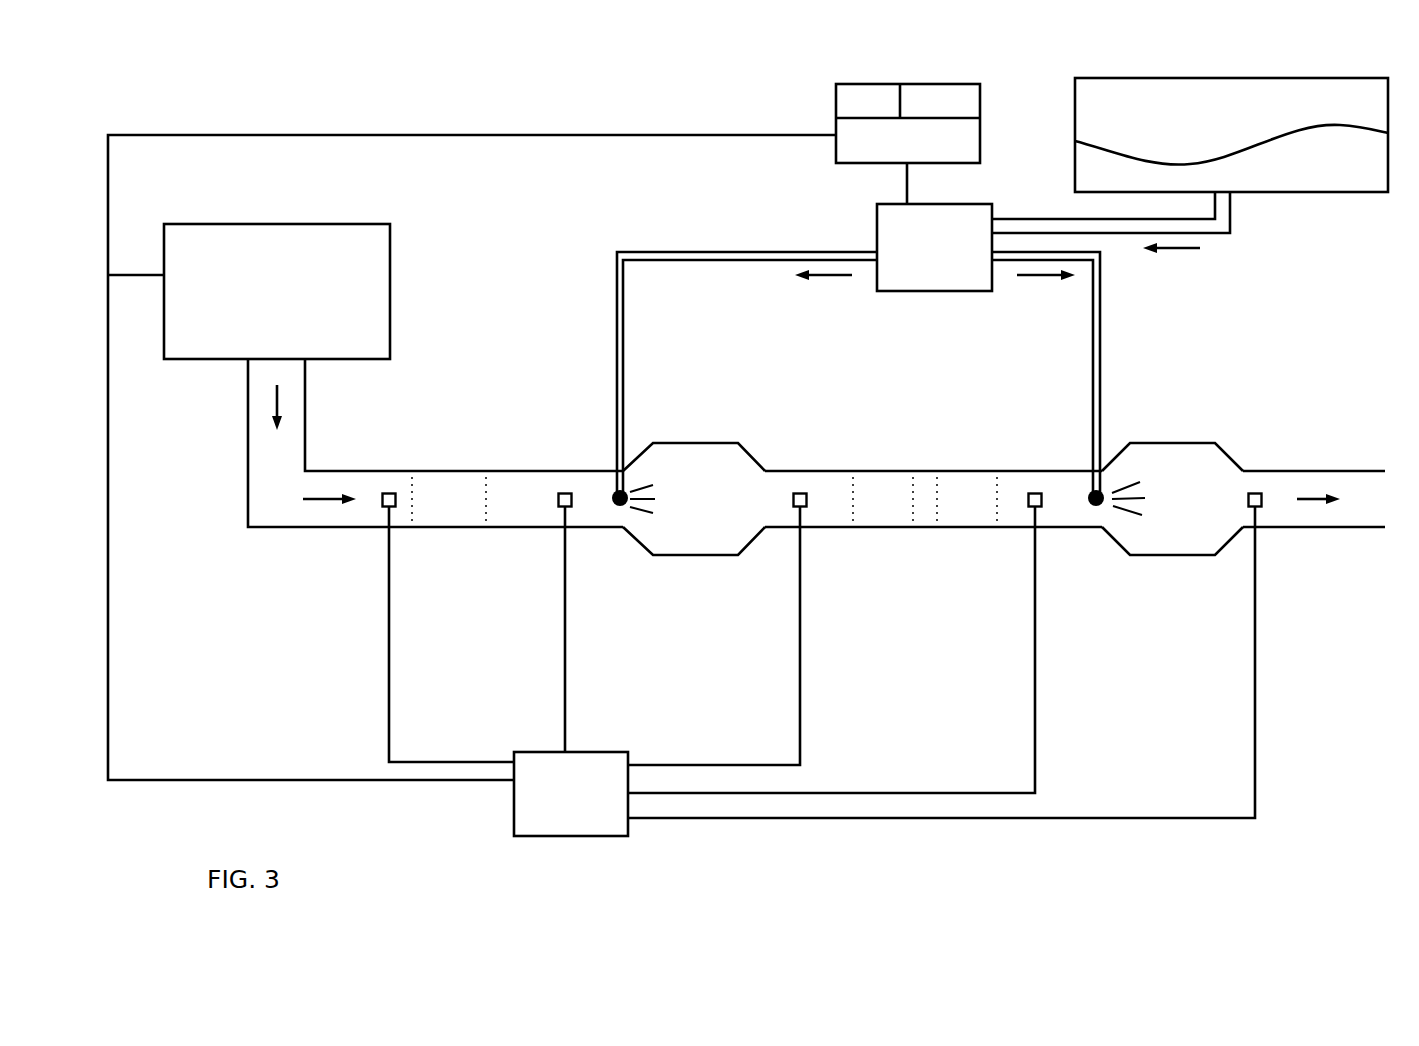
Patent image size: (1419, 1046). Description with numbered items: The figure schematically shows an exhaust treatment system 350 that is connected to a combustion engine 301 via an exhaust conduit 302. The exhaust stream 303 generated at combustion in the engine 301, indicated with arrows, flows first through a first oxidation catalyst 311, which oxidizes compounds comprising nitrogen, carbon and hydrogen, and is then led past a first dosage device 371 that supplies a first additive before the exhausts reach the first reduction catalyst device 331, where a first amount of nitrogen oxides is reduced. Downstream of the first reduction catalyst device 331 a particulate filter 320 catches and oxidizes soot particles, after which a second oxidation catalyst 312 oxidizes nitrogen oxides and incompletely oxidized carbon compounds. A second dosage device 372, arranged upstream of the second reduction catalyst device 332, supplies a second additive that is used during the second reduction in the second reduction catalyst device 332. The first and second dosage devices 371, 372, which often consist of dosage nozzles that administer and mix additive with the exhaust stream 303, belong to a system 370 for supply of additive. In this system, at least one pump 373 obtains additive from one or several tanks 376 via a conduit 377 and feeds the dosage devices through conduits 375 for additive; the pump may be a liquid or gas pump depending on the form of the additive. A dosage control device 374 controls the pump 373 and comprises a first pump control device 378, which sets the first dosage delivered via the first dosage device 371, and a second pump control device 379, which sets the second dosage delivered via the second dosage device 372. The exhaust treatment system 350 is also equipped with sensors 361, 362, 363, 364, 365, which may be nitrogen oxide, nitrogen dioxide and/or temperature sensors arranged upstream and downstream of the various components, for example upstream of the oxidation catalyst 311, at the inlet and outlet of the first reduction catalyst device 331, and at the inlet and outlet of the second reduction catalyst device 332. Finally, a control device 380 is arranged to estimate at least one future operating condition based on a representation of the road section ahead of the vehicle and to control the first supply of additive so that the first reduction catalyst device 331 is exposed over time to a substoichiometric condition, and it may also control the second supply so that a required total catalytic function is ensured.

The combustion engine 301 is at (249, 291).
The exhaust conduit 302 is at (248, 443).
The exhaust stream 303 is at (315, 510).
The first oxidation catalyst 311 is at (455, 505).
The second oxidation catalyst 312 is at (977, 503).
The particulate filter DPF 320 is at (893, 503).
The first reduction catalyst device 331 is at (682, 537).
The second reduction catalyst device 332 is at (1175, 537).
The exhaust treatment system 350 is at (1310, 654).
The sensor 361 is at (565, 492).
The sensor 362 is at (800, 492).
The sensor 363 is at (1035, 492).
The sensor 364 is at (1255, 492).
The sensor 365 is at (389, 492).
The system for supply of additive 370 is at (752, 107).
The first dosage device 371 is at (617, 508).
The second dosage device 372 is at (1093, 508).
The pump 373 is at (934, 227).
The dosage control device 374 is at (544, 432).
The conduits for additive 375 is at (828, 280).
The tank for additive 376 is at (1231, 135).
The conduit 377 is at (1230, 223).
The first pump control device 378 is at (872, 101).
The second pump control device 379 is at (932, 103).
The control device 380 is at (571, 794).